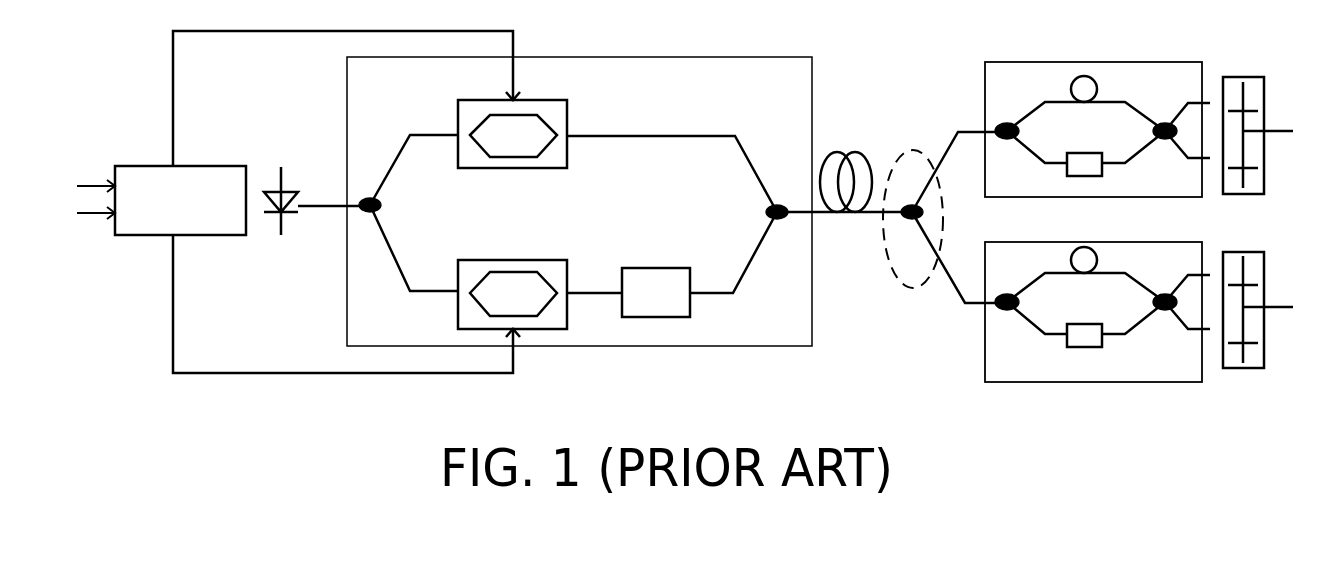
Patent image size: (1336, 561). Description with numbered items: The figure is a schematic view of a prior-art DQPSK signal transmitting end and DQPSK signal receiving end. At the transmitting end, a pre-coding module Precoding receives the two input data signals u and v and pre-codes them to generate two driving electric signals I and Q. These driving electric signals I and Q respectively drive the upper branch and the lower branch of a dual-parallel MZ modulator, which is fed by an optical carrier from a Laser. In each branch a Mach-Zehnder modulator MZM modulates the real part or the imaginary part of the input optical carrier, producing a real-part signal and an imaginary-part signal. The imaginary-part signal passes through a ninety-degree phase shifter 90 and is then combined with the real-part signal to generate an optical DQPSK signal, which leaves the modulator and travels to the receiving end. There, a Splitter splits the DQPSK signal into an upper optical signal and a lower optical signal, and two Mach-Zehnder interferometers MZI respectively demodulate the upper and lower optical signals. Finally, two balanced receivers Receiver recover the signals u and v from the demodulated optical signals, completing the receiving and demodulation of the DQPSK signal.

The pre-coding module Precoding is at (180, 200).
The driving electric signal I is at (336, 98).
The driving electric signal Q is at (331, 304).
The input data signal u is at (86, 183).
The input data signal v is at (86, 211).
The laser source Laser is at (310, 215).
The Mach-Zehnder modulator MZM is at (512, 214).
The 90° phase shifter 90 is at (656, 292).
The splitter Splitter is at (909, 201).
The Mach-Zehnder interferometer MZI is at (1097, 222).
The balanced receiver Receiver is at (1259, 244).